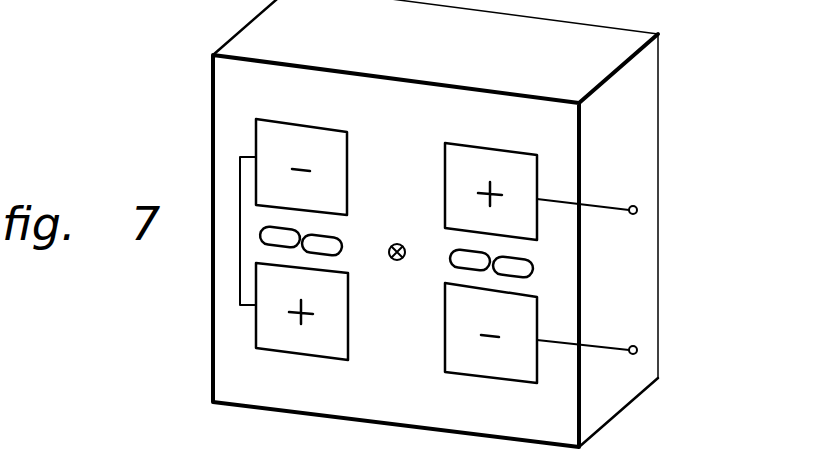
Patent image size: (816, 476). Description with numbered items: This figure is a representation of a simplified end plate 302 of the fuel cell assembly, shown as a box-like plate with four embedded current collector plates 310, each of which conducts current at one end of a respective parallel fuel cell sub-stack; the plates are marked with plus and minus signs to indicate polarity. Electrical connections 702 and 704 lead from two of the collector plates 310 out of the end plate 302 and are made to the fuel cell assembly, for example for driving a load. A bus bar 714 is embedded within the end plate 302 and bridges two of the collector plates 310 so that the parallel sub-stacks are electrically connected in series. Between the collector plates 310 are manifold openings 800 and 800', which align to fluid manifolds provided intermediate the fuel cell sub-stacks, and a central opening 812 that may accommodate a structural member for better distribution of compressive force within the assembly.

The end plate 302 is at (276, 38).
The bus bar 714 is at (243, 164).
The current collector plates 310 is at (446, 166).
The manifold openings 800 is at (241, 264).
The manifold openings 800' is at (548, 290).
The opening 812 is at (396, 244).
The electrical connection 702 is at (615, 205).
The electrical connection 704 is at (608, 352).